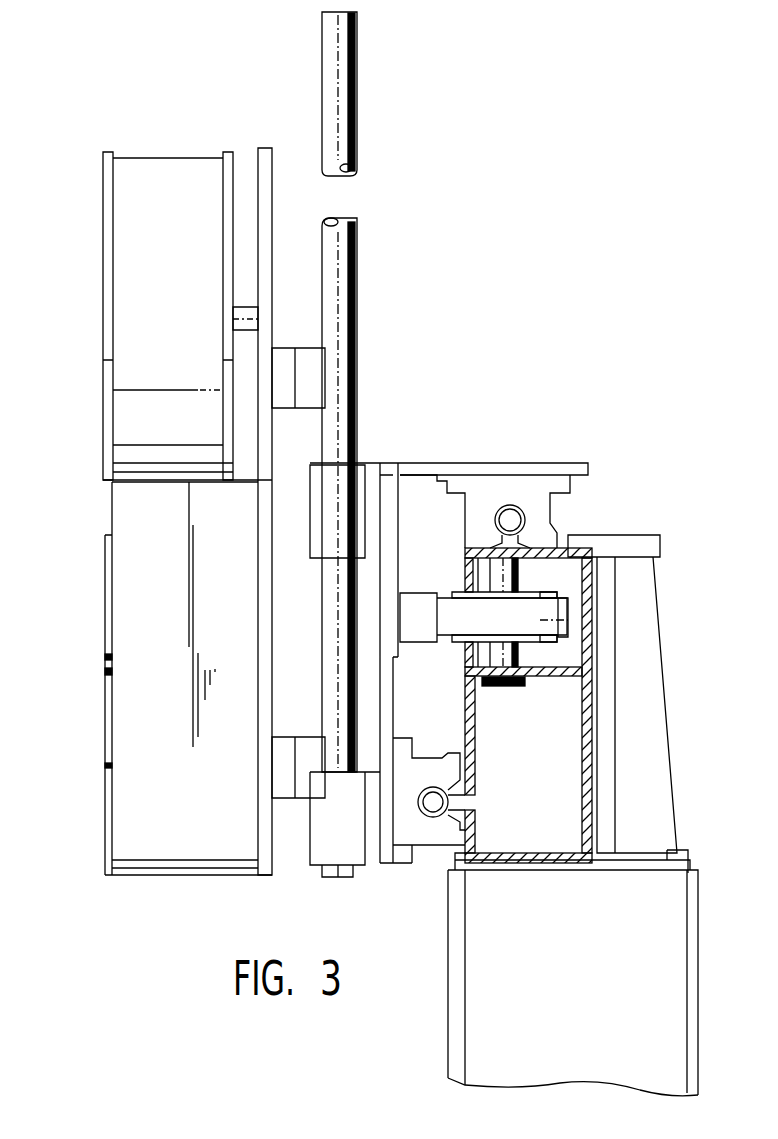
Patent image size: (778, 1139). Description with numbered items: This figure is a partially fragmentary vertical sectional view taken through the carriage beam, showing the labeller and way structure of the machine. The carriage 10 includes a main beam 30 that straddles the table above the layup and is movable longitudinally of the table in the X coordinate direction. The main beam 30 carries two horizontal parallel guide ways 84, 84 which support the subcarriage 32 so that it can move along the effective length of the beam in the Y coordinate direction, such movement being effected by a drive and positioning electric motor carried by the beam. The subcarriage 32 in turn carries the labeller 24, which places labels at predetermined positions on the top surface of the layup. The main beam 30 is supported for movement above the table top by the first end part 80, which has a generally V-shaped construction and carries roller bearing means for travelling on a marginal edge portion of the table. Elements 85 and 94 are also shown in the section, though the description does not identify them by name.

The carriage 10 is at (678, 626).
The labeller 24 is at (78, 653).
The main beam 30 is at (465, 712).
The subcarriage 32 is at (388, 473).
The first end part 80 is at (693, 1007).
The guide way 84 is at (512, 519).
The shaft 85 is at (460, 613).
The collar 94 is at (540, 591).